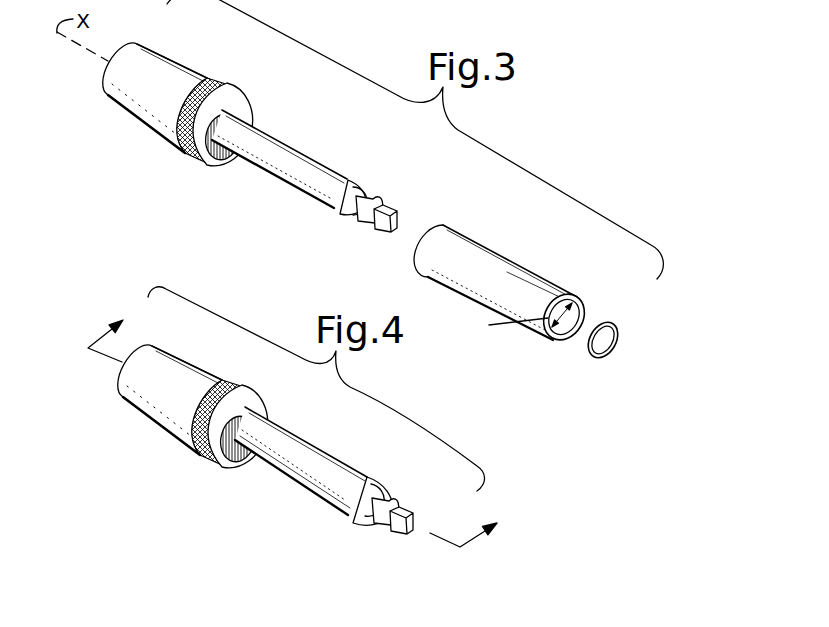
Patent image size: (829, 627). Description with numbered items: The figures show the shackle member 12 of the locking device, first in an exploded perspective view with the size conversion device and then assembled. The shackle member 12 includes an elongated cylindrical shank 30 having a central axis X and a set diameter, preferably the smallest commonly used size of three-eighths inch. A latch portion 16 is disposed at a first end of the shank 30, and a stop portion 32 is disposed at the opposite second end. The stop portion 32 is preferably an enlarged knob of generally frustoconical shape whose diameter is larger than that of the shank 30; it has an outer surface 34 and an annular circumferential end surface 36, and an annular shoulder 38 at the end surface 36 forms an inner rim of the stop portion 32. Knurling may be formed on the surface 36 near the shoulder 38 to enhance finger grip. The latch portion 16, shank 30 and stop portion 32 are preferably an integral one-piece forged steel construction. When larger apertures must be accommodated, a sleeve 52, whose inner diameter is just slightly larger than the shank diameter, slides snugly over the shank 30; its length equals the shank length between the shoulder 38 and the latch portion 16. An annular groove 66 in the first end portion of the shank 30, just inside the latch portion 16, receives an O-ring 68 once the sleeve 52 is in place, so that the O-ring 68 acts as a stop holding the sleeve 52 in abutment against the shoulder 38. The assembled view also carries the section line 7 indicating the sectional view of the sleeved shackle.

In FIG. 3, the shackle member 12 is at (250, 128).
In FIG. 3, the latch portion 16 is at (384, 207).
In FIG. 4, the latch portion 16 is at (392, 533).
In FIG. 3, the shank 30 is at (265, 140).
In FIG. 3, the stop portion 32 is at (150, 98).
In FIG. 4, the stop portion 32 is at (162, 407).
In FIG. 3, the outer surface 34 is at (165, 72).
In FIG. 3, the annular circumferential end surface 36 is at (214, 78).
In FIG. 3, the annular shoulder 38 is at (239, 100).
In FIG. 3, the sleeve 52 is at (470, 242).
In FIG. 4, the sleeve 52 is at (287, 486).
In FIG. 3, the annular groove 66 is at (348, 181).
In FIG. 3, the O-ring 68 is at (624, 331).
In FIG. 4, the O-ring 68 is at (369, 479).
In FIG. 4, the section line 7- 7 is at (303, 419).